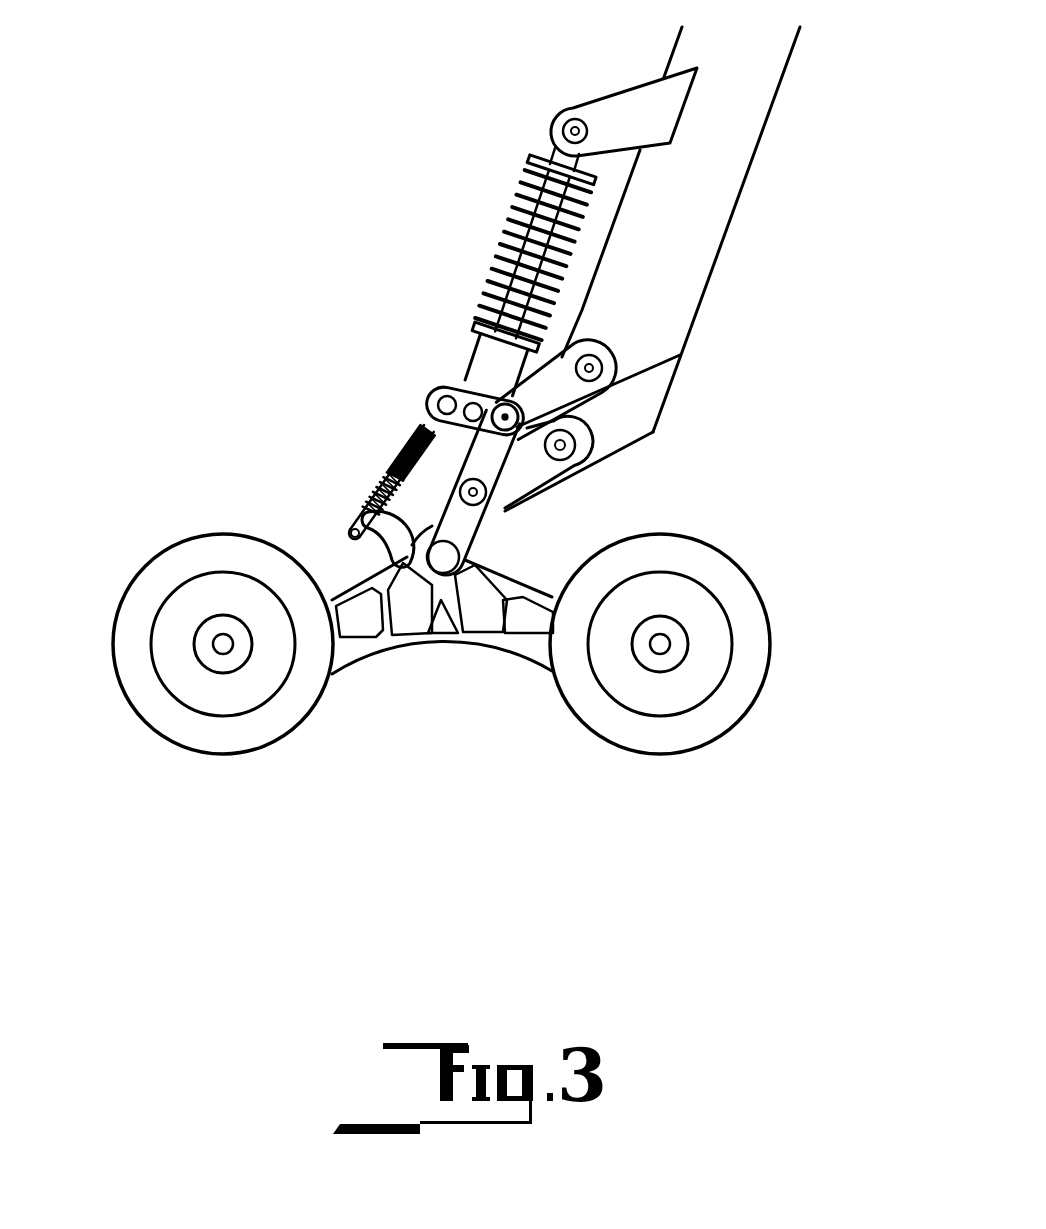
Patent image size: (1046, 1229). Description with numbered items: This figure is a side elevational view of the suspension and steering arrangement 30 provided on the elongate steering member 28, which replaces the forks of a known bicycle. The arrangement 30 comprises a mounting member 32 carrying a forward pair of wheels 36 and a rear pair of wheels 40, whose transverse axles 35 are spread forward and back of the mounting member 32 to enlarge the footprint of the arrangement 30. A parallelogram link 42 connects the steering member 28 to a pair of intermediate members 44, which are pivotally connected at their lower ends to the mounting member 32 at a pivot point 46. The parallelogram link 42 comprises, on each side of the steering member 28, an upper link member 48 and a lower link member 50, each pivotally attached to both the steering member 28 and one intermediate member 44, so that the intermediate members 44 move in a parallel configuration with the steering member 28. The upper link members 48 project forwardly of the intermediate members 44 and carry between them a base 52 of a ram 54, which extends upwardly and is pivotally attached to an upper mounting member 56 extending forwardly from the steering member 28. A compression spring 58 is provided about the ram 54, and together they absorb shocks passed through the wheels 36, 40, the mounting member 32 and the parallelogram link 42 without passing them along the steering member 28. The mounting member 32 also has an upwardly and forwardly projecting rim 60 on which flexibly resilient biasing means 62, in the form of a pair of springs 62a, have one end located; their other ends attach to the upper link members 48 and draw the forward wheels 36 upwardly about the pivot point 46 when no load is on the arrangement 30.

The steering member 28 is at (748, 165).
The suspension and steering arrangement 30 is at (205, 320).
The mounting member 32 is at (503, 655).
The transverse axles 35 is at (222, 640).
The forward wheels 36 is at (147, 730).
The rear wheels 40 is at (768, 678).
The parallelogram link 42 is at (622, 408).
The intermediate members 44 is at (467, 520).
The pivot point 46 is at (445, 560).
The upper link member 48 is at (680, 356).
The lower link member 50 is at (527, 470).
The base 52 is at (465, 247).
The ram 54 is at (505, 237).
The upper mounting member 56 is at (627, 103).
The compression spring 58 is at (530, 177).
The rim 60 is at (350, 537).
The flexibly resilient biasing means 62 is at (335, 442).
The springs 62a is at (405, 447).